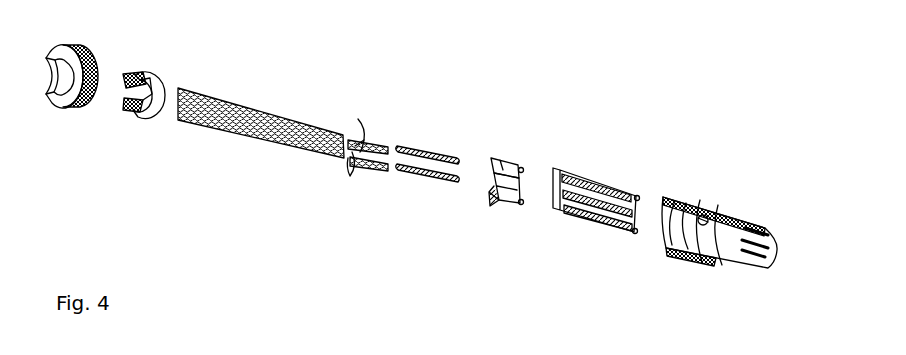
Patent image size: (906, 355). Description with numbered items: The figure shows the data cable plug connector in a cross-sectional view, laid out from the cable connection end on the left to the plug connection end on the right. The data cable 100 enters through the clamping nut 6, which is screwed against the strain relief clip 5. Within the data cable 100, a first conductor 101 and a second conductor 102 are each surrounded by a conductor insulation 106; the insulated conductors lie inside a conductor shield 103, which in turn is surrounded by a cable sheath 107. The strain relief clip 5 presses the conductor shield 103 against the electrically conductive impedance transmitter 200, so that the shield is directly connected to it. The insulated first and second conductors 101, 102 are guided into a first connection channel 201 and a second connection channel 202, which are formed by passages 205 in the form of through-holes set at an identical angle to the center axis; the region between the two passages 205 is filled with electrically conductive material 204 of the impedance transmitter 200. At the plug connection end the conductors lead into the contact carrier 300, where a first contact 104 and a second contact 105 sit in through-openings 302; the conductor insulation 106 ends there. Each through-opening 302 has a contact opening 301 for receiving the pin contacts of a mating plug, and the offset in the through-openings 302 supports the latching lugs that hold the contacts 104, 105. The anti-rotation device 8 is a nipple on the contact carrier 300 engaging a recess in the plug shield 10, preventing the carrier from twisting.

The strain relief clip 5 is at (150, 86).
The clamping nut 6 is at (64, 102).
The anti-rotation device 8 is at (705, 216).
The plug shield 10 is at (719, 226).
The data cable 100 is at (256, 109).
The first conductor 101 is at (256, 110).
The second conductor 102 is at (206, 117).
The conductor shield 103 is at (356, 126).
The first contact 104 is at (419, 150).
The second contact 105 is at (421, 178).
The conductor insulation 106 is at (371, 139).
The cable sheath 107 is at (268, 137).
The impedance transmitter 200 is at (504, 172).
The first connection channel 201 is at (495, 158).
The second connection channel 202 is at (492, 200).
The electrically conductive material 204 is at (509, 206).
The passages 205 is at (537, 155).
The contact carrier 300 is at (615, 198).
The contact opening 301 is at (653, 190).
The through-openings 302 is at (592, 190).